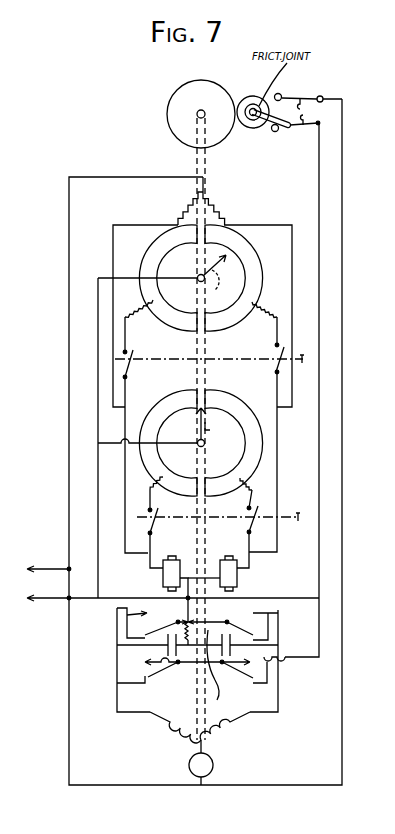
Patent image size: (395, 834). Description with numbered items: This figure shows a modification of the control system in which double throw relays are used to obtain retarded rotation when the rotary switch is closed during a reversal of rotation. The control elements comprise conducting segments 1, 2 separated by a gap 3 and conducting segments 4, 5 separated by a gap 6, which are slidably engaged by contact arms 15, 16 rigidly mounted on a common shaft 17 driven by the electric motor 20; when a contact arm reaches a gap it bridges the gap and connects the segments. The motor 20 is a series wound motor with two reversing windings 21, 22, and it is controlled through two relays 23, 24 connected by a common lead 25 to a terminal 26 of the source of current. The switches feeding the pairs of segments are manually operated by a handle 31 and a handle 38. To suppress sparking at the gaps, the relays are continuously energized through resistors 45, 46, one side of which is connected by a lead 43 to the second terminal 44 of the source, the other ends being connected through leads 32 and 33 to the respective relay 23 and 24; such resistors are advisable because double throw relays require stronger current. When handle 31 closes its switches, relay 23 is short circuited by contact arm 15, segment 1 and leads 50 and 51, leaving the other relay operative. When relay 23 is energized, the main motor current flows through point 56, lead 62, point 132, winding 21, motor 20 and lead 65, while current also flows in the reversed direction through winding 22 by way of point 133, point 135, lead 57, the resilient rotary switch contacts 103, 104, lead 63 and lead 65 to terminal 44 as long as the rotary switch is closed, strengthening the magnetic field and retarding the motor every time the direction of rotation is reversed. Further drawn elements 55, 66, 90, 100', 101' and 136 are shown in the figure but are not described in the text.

The conducting segment 1 is at (161, 409).
The conducting segment 2 is at (240, 409).
The gap 3 is at (204, 400).
The conducting segment 4 is at (157, 250).
The conducting segment 5 is at (245, 260).
The gap 6 is at (204, 238).
The contact arm 15 is at (213, 427).
The contact arm 16 is at (213, 276).
The common shaft 17 is at (209, 347).
The electric motor 20 is at (214, 765).
The reversing winding 21 is at (170, 732).
The reversing winding 22 is at (234, 731).
The relay 23 is at (165, 562).
The relay 24 is at (222, 562).
The common lead 25 is at (107, 598).
The terminal of source of current 26 is at (40, 599).
The handle 31 is at (221, 505).
The lead 32 is at (113, 243).
The lead 33 is at (276, 225).
The handle 38 is at (302, 355).
The lead 43 is at (69, 415).
The terminal of source of current 44 is at (37, 566).
The resistor 45 is at (188, 209).
The resistor 46 is at (216, 207).
The lead 50 is at (119, 445).
The lead 51 is at (96, 478).
The capacitor 55 is at (117, 645).
The contact point 56 is at (256, 636).
The lead 57 is at (319, 556).
The lead 62 is at (208, 623).
The lead 63 is at (343, 572).
The lead 65 is at (69, 758).
The drum 66 is at (222, 82).
The friction joint 90 is at (255, 96).
The conductor 100' is at (183, 673).
The conductor 101' is at (231, 671).
The switch contact 103 is at (303, 127).
The switch contact 104 is at (300, 99).
The contact point 132 is at (125, 618).
The contact point 133 is at (278, 613).
The contact point 135 is at (153, 698).
The relay contact 136 is at (278, 678).